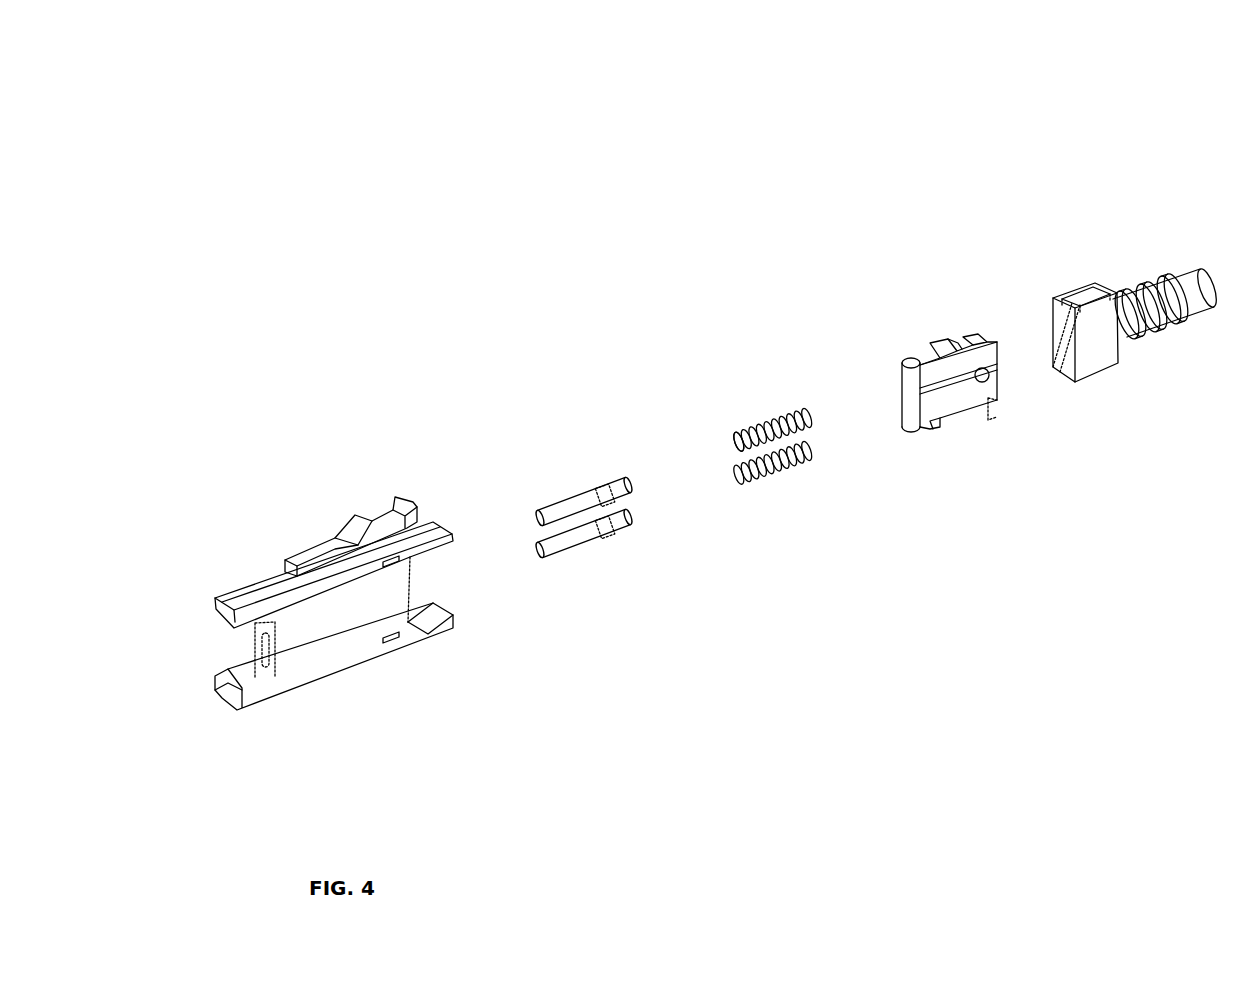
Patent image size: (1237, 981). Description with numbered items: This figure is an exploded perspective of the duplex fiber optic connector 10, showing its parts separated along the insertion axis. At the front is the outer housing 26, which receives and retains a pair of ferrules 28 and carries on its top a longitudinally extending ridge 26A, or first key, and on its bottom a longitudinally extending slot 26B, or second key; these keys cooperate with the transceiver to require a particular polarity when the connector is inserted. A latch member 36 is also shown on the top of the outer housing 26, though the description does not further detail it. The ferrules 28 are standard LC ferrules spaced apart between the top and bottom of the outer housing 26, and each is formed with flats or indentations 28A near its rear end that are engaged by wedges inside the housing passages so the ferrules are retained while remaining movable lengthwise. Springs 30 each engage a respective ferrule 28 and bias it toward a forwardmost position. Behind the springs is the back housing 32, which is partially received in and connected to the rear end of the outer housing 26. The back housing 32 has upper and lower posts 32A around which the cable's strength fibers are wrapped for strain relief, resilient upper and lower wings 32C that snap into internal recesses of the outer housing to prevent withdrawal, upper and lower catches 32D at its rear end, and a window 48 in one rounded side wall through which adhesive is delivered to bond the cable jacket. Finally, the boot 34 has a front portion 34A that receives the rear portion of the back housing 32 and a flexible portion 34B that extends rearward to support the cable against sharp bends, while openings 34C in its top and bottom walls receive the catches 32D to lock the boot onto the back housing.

The fiber optic connector 10 is at (1011, 167).
The outer housing 26 is at (350, 668).
The ridge 26A is at (210, 585).
The slot 26B is at (225, 700).
The latch lever 36 is at (318, 543).
The ferrules 28 is at (583, 507).
The indentations 28A is at (614, 512).
The springs 30 is at (786, 410).
The back housing 32 is at (927, 278).
The posts 32A is at (919, 358).
The wings 32C is at (938, 340).
The catches 32D is at (980, 337).
The window 48 is at (987, 422).
The boot 34 is at (1134, 420).
The front portion 34A is at (1112, 367).
The flexible portion 34B is at (1190, 266).
The openings 34C is at (1093, 283).